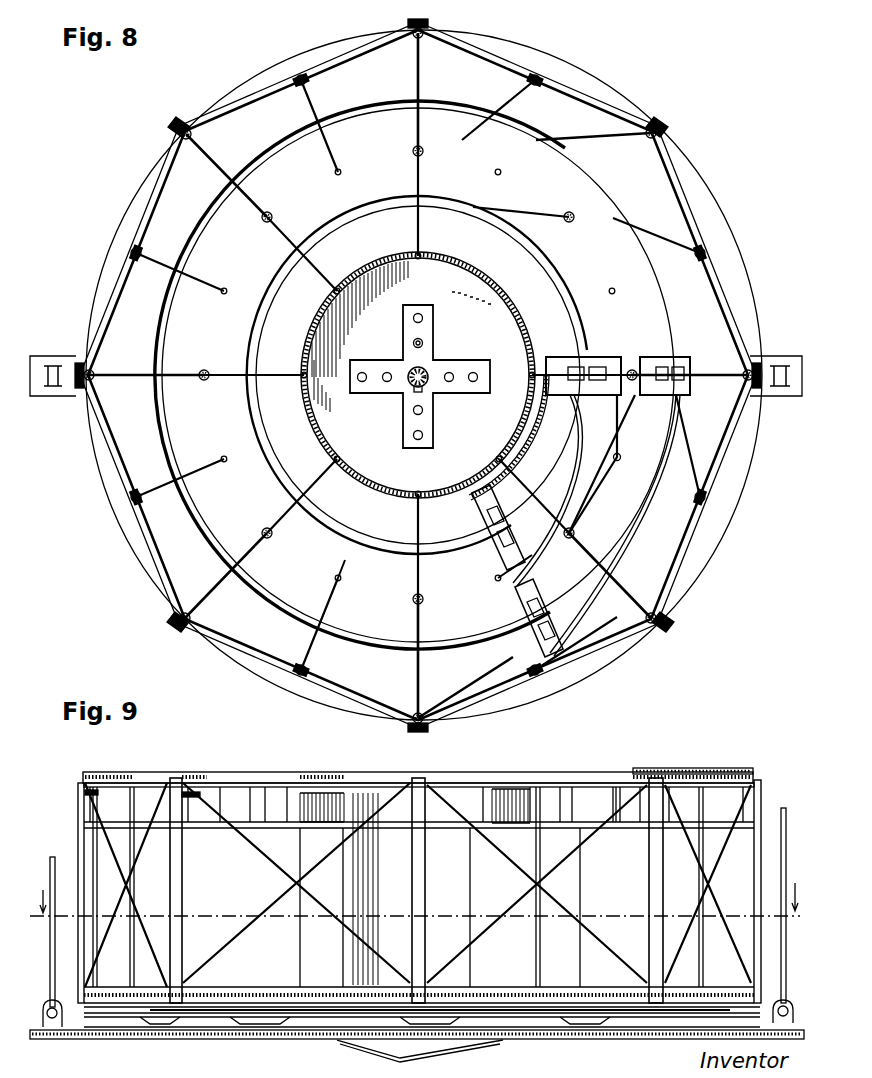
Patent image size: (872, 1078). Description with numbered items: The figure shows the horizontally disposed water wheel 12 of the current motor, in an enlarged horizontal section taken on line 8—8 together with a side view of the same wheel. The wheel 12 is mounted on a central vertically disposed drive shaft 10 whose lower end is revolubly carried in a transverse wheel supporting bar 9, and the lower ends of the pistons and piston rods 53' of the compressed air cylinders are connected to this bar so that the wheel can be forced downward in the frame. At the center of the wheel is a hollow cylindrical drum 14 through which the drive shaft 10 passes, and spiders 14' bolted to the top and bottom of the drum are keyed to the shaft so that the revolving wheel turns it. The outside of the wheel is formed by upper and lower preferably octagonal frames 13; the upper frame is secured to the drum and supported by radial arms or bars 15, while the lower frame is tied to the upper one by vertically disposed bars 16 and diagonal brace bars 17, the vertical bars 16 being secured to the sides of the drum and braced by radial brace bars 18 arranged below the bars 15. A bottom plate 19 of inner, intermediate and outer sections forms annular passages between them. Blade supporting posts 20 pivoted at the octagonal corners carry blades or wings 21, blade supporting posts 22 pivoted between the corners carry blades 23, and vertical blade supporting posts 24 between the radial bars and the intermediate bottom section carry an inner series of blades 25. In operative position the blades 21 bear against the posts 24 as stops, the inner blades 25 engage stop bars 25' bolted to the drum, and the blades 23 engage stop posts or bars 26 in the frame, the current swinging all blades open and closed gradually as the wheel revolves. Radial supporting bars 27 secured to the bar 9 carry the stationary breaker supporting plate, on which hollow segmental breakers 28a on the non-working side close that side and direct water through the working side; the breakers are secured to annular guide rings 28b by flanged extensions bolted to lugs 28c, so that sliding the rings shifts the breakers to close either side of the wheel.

In FIG. 9, the guides 8 is at (417, 907).
In FIG. 8, the wheel supporting bar 9 is at (70, 398).
In FIG. 9, the wheel supporting bar 9 is at (245, 1040).
In FIG. 8, the drive shaft 10 is at (408, 386).
In FIG. 8, the water wheel 12 is at (716, 188).
In FIG. 9, the water wheel 12 is at (690, 770).
In FIG. 8, the outside frames 13 is at (146, 218).
In FIG. 9, the outside frames 13 is at (200, 772).
In FIG. 8, the drum 14 is at (420, 378).
In FIG. 9, the drum 14 is at (375, 889).
In FIG. 8, the spiders 14' is at (446, 348).
In FIG. 9, the radial arms or bars 15 is at (82, 780).
In FIG. 8, the vertical bars 16 is at (172, 124).
In FIG. 9, the vertical bars 16 is at (78, 858).
In FIG. 8, the diagonal brace bars 17 is at (370, 45).
In FIG. 9, the diagonal brace bars 17 is at (118, 870).
In FIG. 9, the radial brace bars 18 is at (419, 807).
In FIG. 8, the bottom plate 19 is at (414, 375).
In FIG. 9, the bottom plate 19 is at (118, 1010).
In FIG. 8, the blade supporting posts 20 is at (428, 30).
In FIG. 9, the blade supporting posts 20 is at (88, 815).
In FIG. 8, the blades or wings 21 is at (420, 100).
In FIG. 9, the blades or wings 21 is at (398, 887).
In FIG. 8, the blade supporting posts 22 is at (298, 75).
In FIG. 9, the blade supporting posts 22 is at (290, 790).
In FIG. 8, the blades 23 is at (325, 148).
In FIG. 9, the blades 23 is at (455, 888).
In FIG. 8, the blade supporting posts 24 is at (424, 155).
In FIG. 9, the blade supporting posts 24 is at (272, 790).
In FIG. 8, the inner series of blades 25 is at (418, 385).
In FIG. 9, the inner series of blades 25 is at (420, 1059).
In FIG. 8, the stop bars 25' is at (423, 386).
In FIG. 8, the stop posts or bars 26 is at (342, 173).
In FIG. 9, the stop posts or bars 26 is at (238, 790).
In FIG. 9, the radial supporting bars 27 is at (128, 1030).
In FIG. 8, the breakers 28a is at (574, 515).
In FIG. 9, the annular guide rings 28b is at (200, 1030).
In FIG. 8, the lugs 28c is at (570, 395).
In FIG. 8, the pistons and piston rods 53' is at (420, 345).
In FIG. 9, the pistons and piston rods 53' is at (418, 917).